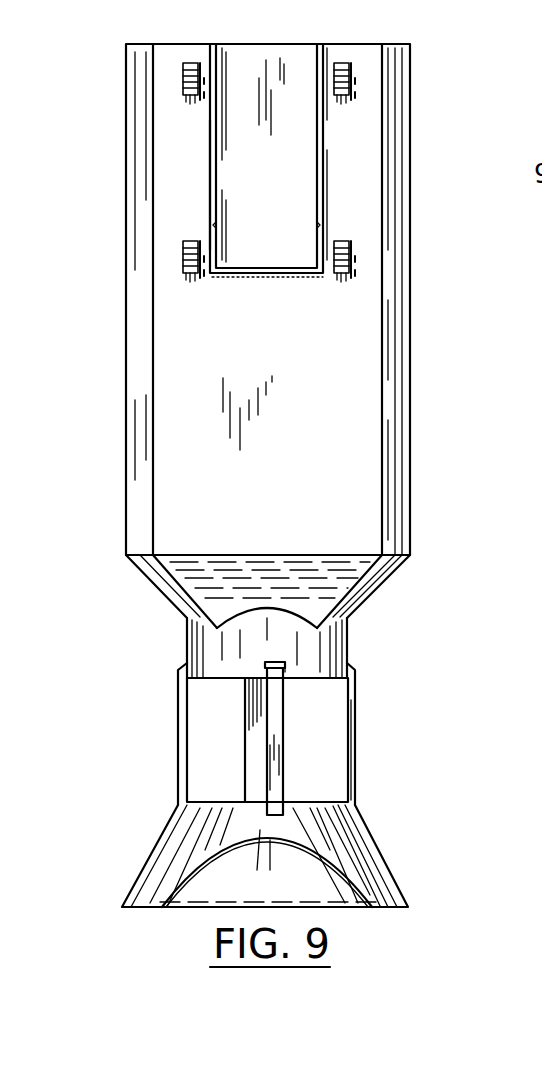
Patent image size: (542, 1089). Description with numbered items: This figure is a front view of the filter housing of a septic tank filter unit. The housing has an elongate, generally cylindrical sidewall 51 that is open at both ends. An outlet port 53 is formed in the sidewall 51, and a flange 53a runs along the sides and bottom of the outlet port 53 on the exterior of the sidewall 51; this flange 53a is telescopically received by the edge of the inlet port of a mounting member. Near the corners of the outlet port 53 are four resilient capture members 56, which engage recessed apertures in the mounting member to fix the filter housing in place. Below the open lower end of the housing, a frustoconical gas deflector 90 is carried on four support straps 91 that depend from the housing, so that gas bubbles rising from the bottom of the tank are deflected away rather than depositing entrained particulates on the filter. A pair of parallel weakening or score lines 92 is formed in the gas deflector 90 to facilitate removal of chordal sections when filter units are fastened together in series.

The sidewall 51 is at (237, 337).
The outlet port 53 is at (242, 150).
The flange 53a is at (212, 182).
The resilient capture members 56 is at (349, 253).
The frustoconical gas deflector 90 is at (382, 868).
The support straps 91 is at (355, 757).
The score lines 92 is at (188, 872).